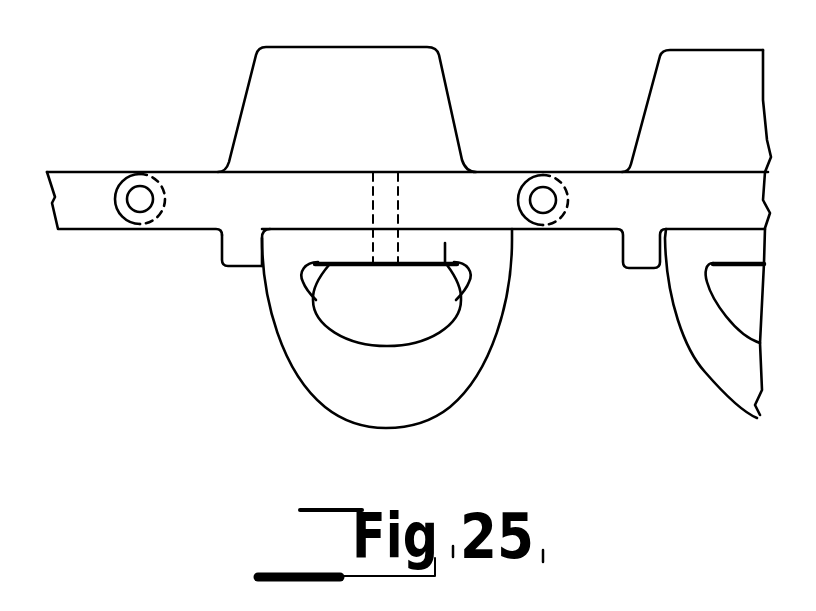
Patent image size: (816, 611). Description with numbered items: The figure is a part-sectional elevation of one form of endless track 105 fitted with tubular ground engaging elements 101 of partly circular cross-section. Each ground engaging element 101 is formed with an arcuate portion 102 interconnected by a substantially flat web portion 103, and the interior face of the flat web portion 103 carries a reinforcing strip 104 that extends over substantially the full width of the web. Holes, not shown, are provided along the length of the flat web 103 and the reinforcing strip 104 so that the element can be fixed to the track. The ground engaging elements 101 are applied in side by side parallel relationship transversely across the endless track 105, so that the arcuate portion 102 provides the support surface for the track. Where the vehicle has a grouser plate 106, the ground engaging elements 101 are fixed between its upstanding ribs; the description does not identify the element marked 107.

The ground engaging element 101 is at (459, 399).
The arcuate portion 102 is at (320, 372).
The flat web portion 103 is at (453, 283).
The reinforcing strip 104 is at (313, 292).
The endless track 105 is at (498, 148).
The grouser plate 106 is at (210, 187).
The tab 107 is at (227, 263).